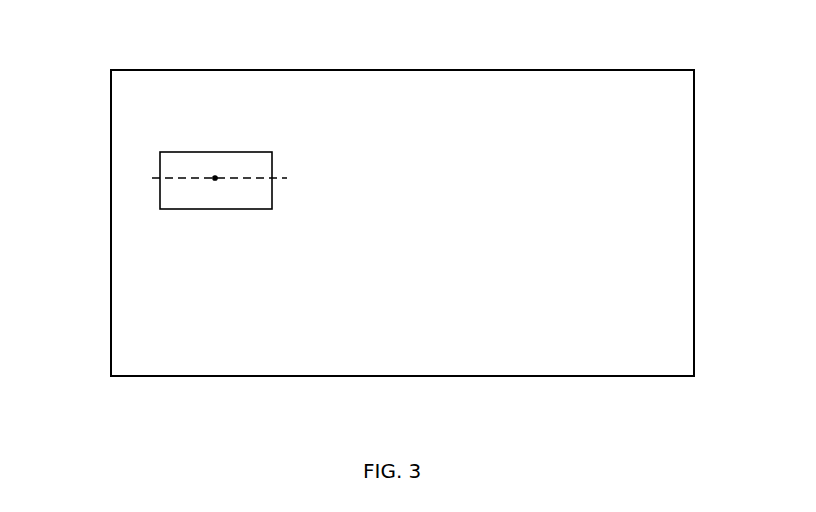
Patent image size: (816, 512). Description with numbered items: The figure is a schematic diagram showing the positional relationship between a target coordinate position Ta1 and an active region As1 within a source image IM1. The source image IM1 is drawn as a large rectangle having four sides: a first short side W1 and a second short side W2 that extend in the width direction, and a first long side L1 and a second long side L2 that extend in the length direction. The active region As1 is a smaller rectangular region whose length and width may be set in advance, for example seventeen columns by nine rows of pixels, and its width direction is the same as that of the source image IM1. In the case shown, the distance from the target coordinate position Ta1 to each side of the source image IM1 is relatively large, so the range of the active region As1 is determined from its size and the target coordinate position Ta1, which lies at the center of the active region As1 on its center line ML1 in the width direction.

The source image IM1 is at (402, 223).
The first long side L1 is at (377, 69).
The second long side L2 is at (382, 377).
The first short side W1 is at (693, 172).
The second short side W2 is at (112, 142).
The active region As1 is at (159, 187).
The center line ML1 is at (293, 178).
The target coordinate position Ta1 is at (216, 176).